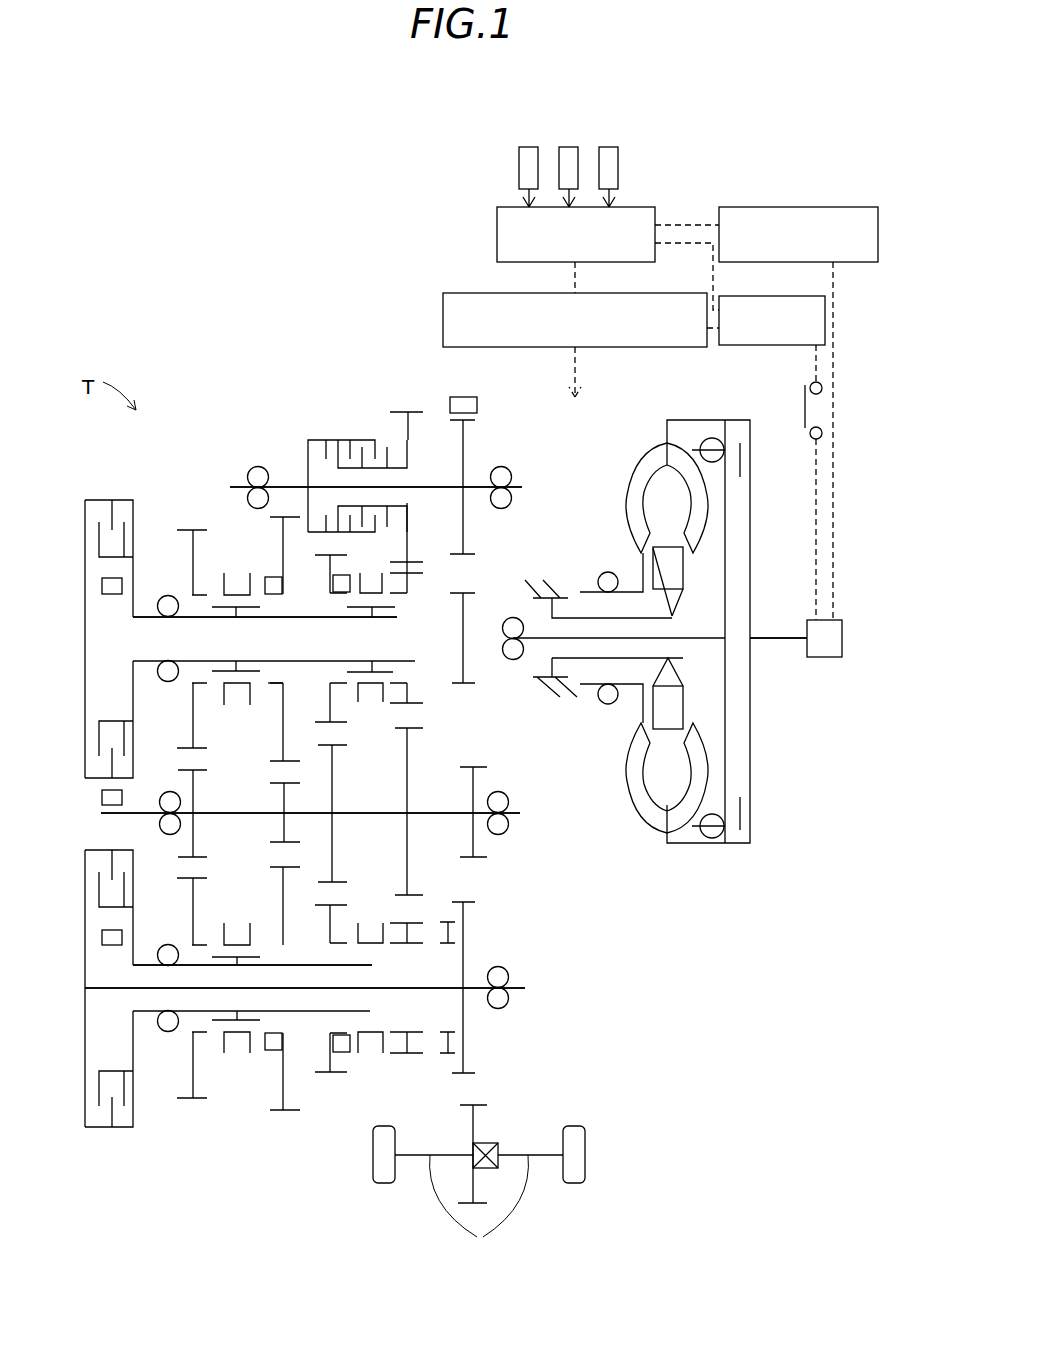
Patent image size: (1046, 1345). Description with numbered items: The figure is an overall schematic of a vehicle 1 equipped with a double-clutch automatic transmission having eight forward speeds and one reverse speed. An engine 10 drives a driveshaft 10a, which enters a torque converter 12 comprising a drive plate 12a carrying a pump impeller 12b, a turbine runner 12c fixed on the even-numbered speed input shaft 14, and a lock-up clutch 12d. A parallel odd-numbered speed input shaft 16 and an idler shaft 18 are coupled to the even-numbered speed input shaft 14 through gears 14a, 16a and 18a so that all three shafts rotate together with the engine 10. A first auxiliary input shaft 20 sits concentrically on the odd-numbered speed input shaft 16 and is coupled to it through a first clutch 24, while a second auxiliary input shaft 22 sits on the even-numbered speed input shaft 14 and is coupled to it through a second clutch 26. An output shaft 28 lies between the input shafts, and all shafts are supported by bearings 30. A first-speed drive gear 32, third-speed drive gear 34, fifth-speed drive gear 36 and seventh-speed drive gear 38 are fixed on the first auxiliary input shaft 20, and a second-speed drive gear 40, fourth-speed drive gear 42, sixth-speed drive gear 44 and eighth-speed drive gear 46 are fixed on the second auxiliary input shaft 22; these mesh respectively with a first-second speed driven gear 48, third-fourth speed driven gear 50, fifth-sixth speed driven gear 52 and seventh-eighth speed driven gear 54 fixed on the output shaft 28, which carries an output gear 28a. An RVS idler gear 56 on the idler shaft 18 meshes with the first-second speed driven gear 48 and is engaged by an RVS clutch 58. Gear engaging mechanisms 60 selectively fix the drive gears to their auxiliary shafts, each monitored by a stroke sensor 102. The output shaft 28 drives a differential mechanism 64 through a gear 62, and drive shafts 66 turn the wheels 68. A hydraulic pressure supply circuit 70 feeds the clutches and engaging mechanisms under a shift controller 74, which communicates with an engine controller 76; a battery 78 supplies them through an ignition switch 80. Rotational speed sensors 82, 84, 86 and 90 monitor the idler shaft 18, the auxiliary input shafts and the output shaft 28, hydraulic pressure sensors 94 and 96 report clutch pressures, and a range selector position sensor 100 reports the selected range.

The vehicle 1 is at (618, 1088).
The engine 10 is at (833, 620).
The driveshaft 10a is at (775, 641).
The torque converter 12 is at (687, 630).
The drive plate 12a is at (735, 420).
The pump impeller 12b is at (638, 463).
The turbine runner 12c is at (710, 753).
The lock-up clutch 12d is at (725, 833).
The even-numbered speed input shaft 14 is at (493, 636).
The gear 14a is at (456, 687).
The odd-numbered speed input shaft 16 is at (517, 980).
The gear 16a is at (472, 902).
The idler shaft 18 is at (511, 477).
The gear 18a is at (476, 553).
The first auxiliary input shaft 20 is at (363, 968).
The second auxiliary input shaft 22 is at (397, 617).
The first clutch 24 is at (120, 1128).
The second clutch 26 is at (118, 500).
The output shaft 28 is at (513, 807).
The counter gear 28a is at (483, 767).
The bearings 30 is at (168, 595).
The first-speed drive gear 32 is at (415, 922).
The third-speed drive gear 34 is at (325, 908).
The fifth-speed drive gear 36 is at (185, 878).
The seventh-speed drive gear 38 is at (273, 867).
The second-speed drive gear 40 is at (410, 703).
The fourth-speed drive gear 42 is at (318, 722).
The sixth-speed drive gear 44 is at (188, 747).
The eighth-speed drive gear 46 is at (270, 762).
The first-second speed driven gear 48 is at (412, 728).
The third-fourth speed driven gear 50 is at (337, 747).
The fifth-sixth speed driven gear 52 is at (195, 770).
The seventh-eighth speed driven gear 54 is at (288, 785).
The RVS idler gear 56 is at (412, 410).
The RVS clutch 58 is at (318, 440).
The gear engaging mechanism 60 is at (236, 582).
The gear 62 is at (475, 1103).
The differential mechanism 64 is at (485, 1142).
The drive shafts 66 is at (479, 1211).
The wheels 68 is at (373, 1150).
The hydraulic pressure supply circuit 70 is at (495, 292).
The shift controller 74 is at (497, 222).
The engine controller 76 is at (793, 207).
The battery 78 is at (748, 296).
The ignition switch 80 is at (803, 430).
The first rotational speed sensor 82 is at (460, 397).
The second rotational speed sensor 84 is at (115, 947).
The third rotational speed sensor 86 is at (115, 597).
The fourth rotational speed sensor 90 is at (100, 798).
The hydraulic pressure sensor 94 is at (527, 147).
The hydraulic pressure sensor 96 is at (568, 147).
The range selector position sensor 100 is at (606, 147).
The stroke sensor 102 is at (350, 590).